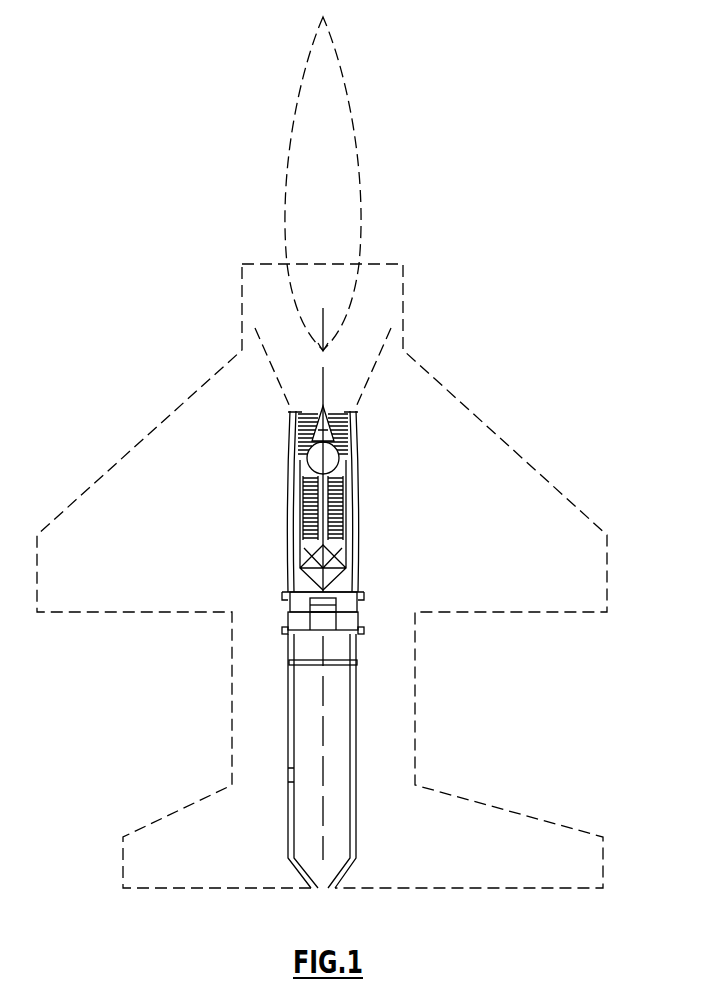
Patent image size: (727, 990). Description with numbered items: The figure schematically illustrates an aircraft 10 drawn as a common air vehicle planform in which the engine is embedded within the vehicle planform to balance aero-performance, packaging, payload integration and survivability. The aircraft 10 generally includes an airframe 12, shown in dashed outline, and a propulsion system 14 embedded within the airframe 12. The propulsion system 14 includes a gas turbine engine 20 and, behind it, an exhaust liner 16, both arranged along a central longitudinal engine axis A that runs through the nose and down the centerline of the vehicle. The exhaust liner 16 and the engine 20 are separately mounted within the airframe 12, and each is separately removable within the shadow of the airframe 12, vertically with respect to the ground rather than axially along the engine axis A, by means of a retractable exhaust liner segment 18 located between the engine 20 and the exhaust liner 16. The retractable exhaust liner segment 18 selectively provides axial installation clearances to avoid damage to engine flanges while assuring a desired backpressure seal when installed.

The aircraft 10 is at (343, 452).
The airframe 12 is at (583, 613).
The propulsion system 14 is at (325, 761).
The exhaust liner 16 is at (287, 775).
The retractable exhaust liner segment 18 is at (363, 600).
The gas turbine engine 20 is at (289, 497).
The central longitudinal engine axis A is at (323, 370).